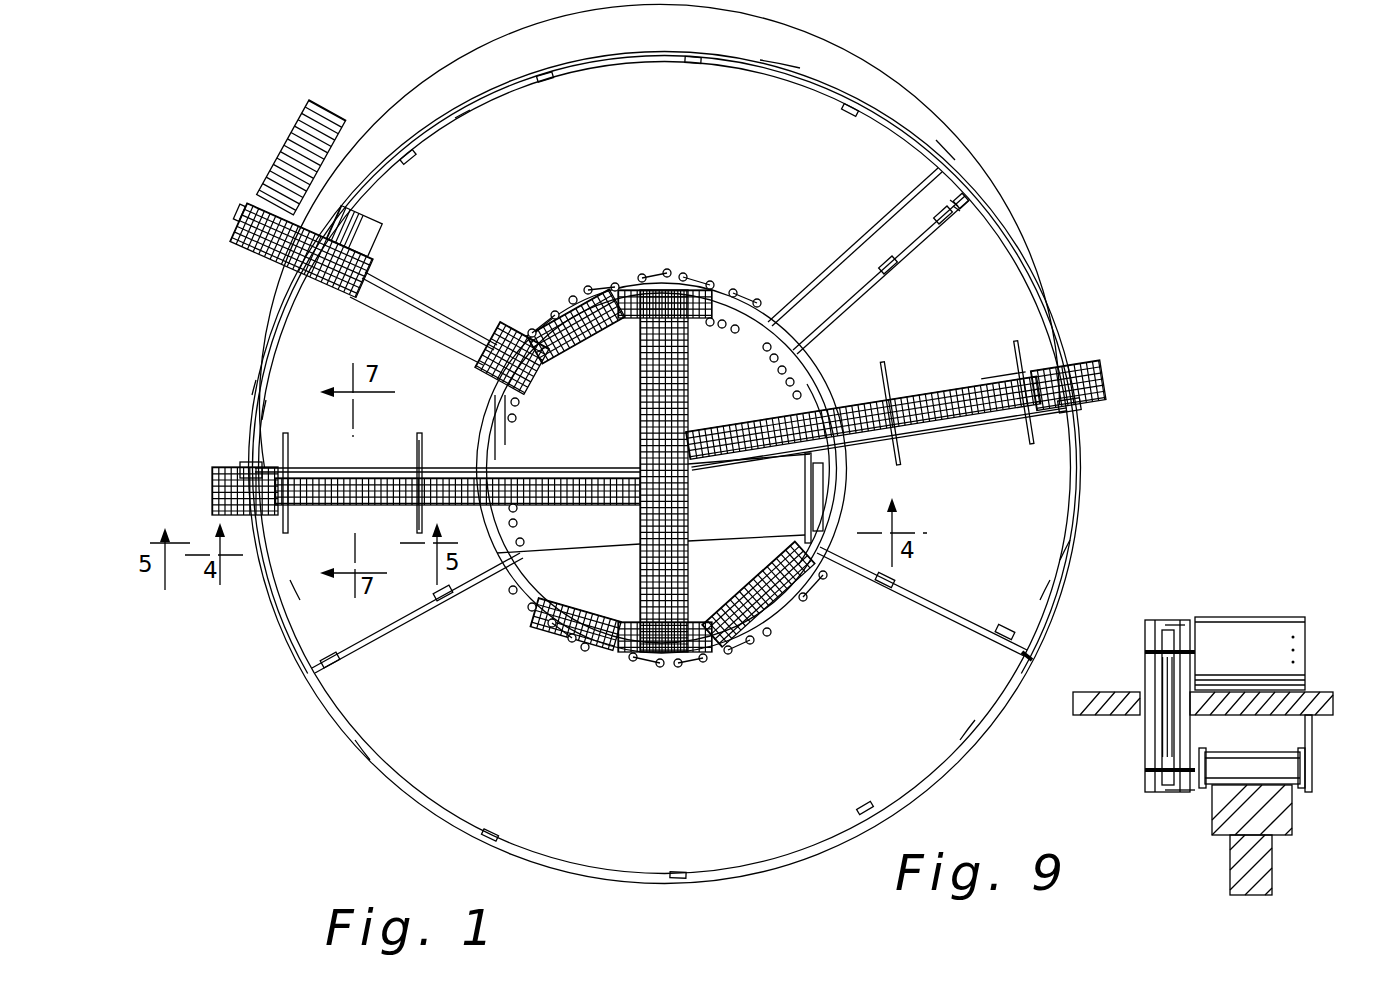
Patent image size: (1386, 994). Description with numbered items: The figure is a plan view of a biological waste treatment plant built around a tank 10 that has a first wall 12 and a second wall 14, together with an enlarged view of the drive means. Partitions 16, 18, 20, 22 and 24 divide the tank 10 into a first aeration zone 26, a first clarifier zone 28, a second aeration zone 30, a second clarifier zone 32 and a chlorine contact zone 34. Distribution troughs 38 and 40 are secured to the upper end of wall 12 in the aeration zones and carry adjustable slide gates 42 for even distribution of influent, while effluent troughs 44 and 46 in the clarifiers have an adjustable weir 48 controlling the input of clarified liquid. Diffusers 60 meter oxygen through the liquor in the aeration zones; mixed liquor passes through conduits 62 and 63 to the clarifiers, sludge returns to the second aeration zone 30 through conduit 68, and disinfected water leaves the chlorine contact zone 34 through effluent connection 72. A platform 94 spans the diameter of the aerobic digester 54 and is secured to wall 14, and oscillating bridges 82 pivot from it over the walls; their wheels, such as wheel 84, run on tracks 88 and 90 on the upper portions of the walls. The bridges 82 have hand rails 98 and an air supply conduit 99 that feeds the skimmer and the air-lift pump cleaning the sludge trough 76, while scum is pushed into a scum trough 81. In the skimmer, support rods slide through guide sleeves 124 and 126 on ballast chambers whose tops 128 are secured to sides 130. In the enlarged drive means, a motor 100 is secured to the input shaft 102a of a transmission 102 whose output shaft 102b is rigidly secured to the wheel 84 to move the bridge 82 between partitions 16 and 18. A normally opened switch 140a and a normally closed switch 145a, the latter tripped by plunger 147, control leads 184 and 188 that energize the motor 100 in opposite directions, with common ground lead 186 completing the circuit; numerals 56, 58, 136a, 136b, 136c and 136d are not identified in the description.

In FIG. 1, the tank 10 is at (423, 118).
In FIG. 1, the first wall 12 is at (486, 76).
In FIG. 9, the first wall 12 is at (1272, 875).
In FIG. 1, the second wall 14 is at (753, 315).
In FIG. 1, the partition 16 is at (406, 288).
In FIG. 1, the partition 18 is at (393, 632).
In FIG. 1, the partition 20 is at (953, 603).
In FIG. 1, the partition 22 is at (887, 275).
In FIG. 1, the partition 24 is at (870, 228).
In FIG. 1, the first aeration zone 26 is at (780, 122).
In FIG. 1, the first clarifier zone 28 is at (300, 565).
In FIG. 1, the second aeration zone 30 is at (960, 725).
In FIG. 1, the second clarifier zone 32 is at (1100, 545).
In FIG. 1, the chlorine contact zone 34 is at (970, 200).
In FIG. 1, the distribution trough 38 is at (490, 145).
In FIG. 1, the distribution trough 40 is at (380, 775).
In FIG. 1, the adjustable slide gates 42 is at (412, 163).
In FIG. 1, the effluent trough 44 is at (258, 410).
In FIG. 1, the effluent trough 46 is at (1060, 590).
In FIG. 1, the adjustable weir 48 is at (1012, 297).
In FIG. 1, the aerobic digester 54 is at (732, 392).
In FIG. 1, the chain links 56 is at (742, 337).
In FIG. 1, the carriage 58 is at (325, 202).
In FIG. 1, the diffusers 60 is at (590, 275).
In FIG. 1, the conduit 62 is at (518, 446).
In FIG. 1, the conduit 63 is at (803, 480).
In FIG. 1, the conduit 68 is at (732, 542).
In FIG. 1, the effluent connection 72 is at (950, 148).
In FIG. 1, the sludge trough 76 is at (482, 402).
In FIG. 1, the scum trough 81 is at (462, 320).
In FIG. 1, the oscillating bridge 82 is at (1083, 363).
In FIG. 9, the oscillating bridge 82 is at (1335, 710).
In FIG. 9, the wheel 84 is at (1240, 775).
In FIG. 1, the track 88 is at (250, 385).
In FIG. 9, the track 88 is at (1222, 828).
In FIG. 1, the track 90 is at (518, 420).
In FIG. 1, the platform 94 is at (650, 365).
In FIG. 1, the hand rails 98 is at (982, 430).
In FIG. 1, the air supply conduit 99 is at (602, 465).
In FIG. 1, the motor 100 is at (1105, 395).
In FIG. 9, the motor 100 is at (1240, 615).
In FIG. 1, the transmission 102 is at (1092, 412).
In FIG. 9, the transmission 102 is at (1143, 649).
In FIG. 9, the input shaft 102a is at (1190, 622).
In FIG. 9, the output shaft 102b is at (1198, 798).
In FIG. 1, the guide sleeve 124 is at (288, 525).
In FIG. 1, the guide sleeve 126 is at (289, 450).
In FIG. 1, the tops 128 is at (416, 533).
In FIG. 1, the sides 130 is at (417, 450).
In FIG. 1, the spoke clamp 136a is at (338, 664).
In FIG. 1, the spoke clamp 136b is at (450, 600).
In FIG. 1, the spoke clamp 136c is at (892, 580).
In FIG. 1, the spoke clamp 136d is at (1005, 628).
In FIG. 1, the normally opened switch 140a is at (1015, 656).
In FIG. 1, the normally closed switch 145a is at (960, 200).
In FIG. 1, the plunger 147 is at (962, 207).
In FIG. 9, the lead 184 is at (1295, 637).
In FIG. 9, the common ground lead 186 is at (1295, 650).
In FIG. 9, the lead 188 is at (1295, 662).